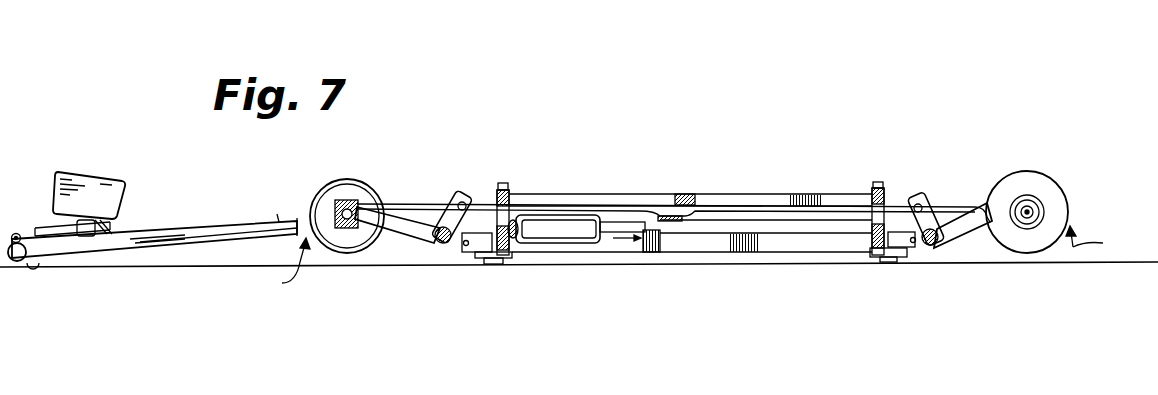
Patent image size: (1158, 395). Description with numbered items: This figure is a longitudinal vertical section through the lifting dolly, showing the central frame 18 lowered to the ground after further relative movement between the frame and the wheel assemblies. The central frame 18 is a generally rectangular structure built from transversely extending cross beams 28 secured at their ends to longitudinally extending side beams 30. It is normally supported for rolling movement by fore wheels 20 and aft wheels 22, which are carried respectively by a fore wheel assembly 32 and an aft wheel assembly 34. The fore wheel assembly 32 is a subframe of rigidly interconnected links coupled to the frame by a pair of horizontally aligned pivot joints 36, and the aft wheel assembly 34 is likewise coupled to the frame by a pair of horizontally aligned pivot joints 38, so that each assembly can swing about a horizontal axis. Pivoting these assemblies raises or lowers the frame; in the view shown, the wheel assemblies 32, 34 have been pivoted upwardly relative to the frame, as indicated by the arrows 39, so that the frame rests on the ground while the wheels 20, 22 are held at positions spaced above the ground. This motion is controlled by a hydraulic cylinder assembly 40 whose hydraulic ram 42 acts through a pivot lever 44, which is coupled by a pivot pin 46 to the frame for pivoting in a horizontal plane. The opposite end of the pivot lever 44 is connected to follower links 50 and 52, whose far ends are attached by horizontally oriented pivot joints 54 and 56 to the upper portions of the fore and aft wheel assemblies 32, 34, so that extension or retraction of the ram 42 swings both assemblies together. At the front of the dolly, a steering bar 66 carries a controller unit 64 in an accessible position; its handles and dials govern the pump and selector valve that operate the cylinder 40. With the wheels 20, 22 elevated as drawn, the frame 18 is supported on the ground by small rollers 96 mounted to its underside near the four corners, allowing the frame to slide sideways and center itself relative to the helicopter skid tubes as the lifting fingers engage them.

The central frame 18 is at (857, 176).
The fore wheels 20 is at (349, 181).
The aft wheels 22 is at (1053, 181).
The cross beams 28 is at (857, 245).
The side beams 30 is at (583, 199).
The fore wheel assembly 32 is at (406, 246).
The aft wheel assembly 34 is at (981, 252).
The pivot joints 36 is at (462, 241).
The pivot joints 38 is at (917, 245).
The arrows 39 is at (692, 262).
The hydraulic cylinder assembly 40 is at (574, 250).
The hydraulic ram 42 is at (623, 228).
The pivot lever 44 is at (703, 224).
The pivot pin 46 is at (670, 214).
The follower link 50 is at (512, 210).
The follower link 52 is at (742, 213).
The pivot joint 54 is at (462, 196).
The pivot joint 56 is at (921, 202).
The controller unit 64 is at (104, 168).
The steering bar 66 is at (110, 253).
The rollers 96 is at (487, 256).